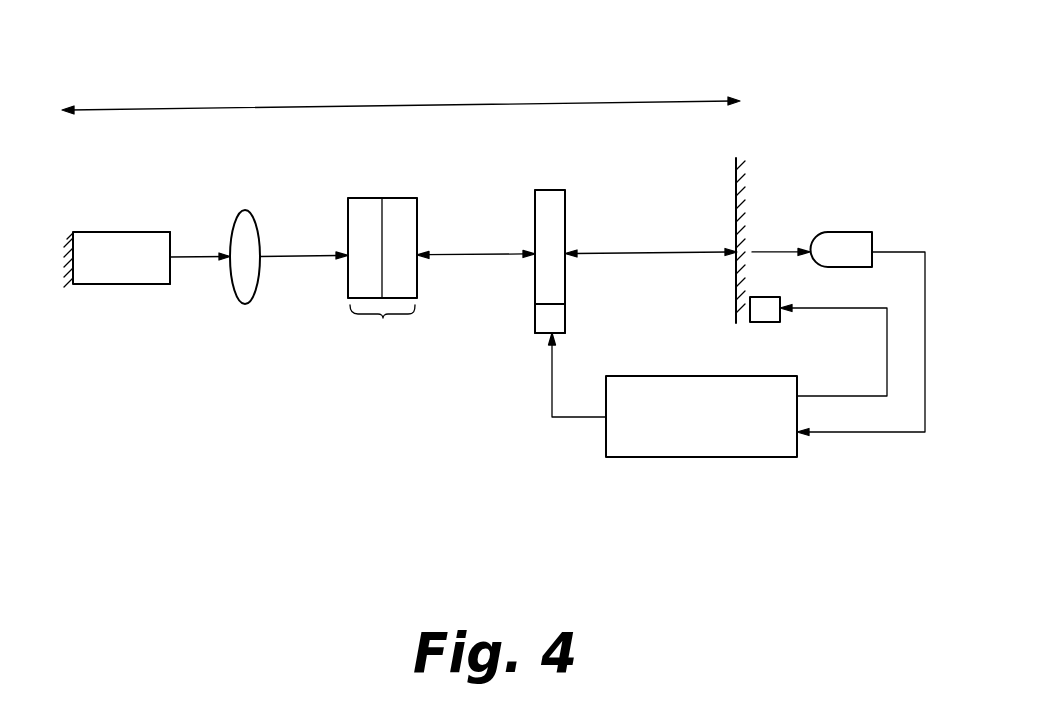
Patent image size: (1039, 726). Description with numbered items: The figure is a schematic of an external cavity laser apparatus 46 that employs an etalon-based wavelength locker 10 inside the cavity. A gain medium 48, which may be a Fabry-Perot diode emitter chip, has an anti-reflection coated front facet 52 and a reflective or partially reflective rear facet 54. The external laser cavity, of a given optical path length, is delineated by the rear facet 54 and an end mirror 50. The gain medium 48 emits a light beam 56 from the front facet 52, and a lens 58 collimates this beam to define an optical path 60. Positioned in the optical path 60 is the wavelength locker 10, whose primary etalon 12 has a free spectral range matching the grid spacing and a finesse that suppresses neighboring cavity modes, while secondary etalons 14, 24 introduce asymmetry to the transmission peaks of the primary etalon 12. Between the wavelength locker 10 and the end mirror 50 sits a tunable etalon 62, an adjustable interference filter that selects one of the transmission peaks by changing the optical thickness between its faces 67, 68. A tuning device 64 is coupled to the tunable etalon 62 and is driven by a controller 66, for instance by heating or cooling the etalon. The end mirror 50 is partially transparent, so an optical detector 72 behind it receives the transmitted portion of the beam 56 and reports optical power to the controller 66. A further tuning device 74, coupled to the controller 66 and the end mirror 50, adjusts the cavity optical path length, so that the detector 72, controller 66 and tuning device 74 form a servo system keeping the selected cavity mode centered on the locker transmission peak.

The wavelength locker 10 is at (416, 245).
The primary etalon 12 is at (361, 198).
The secondary etalon 14 is at (400, 198).
The secondary etalon 24 is at (382, 276).
The laser apparatus 46 is at (866, 86).
The gain medium 48 is at (108, 279).
The end mirror 50 is at (736, 162).
The front facet 52 is at (171, 233).
The rear facet 54 is at (71, 238).
The light beam 56 is at (198, 258).
The lens 58 is at (250, 223).
The optical path 60 is at (307, 258).
The tunable etalon 62 is at (555, 261).
The tuning device 64 is at (540, 322).
The controller 66 is at (651, 458).
The face of tuning etalon 67 is at (565, 283).
The face of tuning etalon 68 is at (535, 283).
The optical detector 72 is at (852, 240).
The tuning device 74 is at (767, 322).